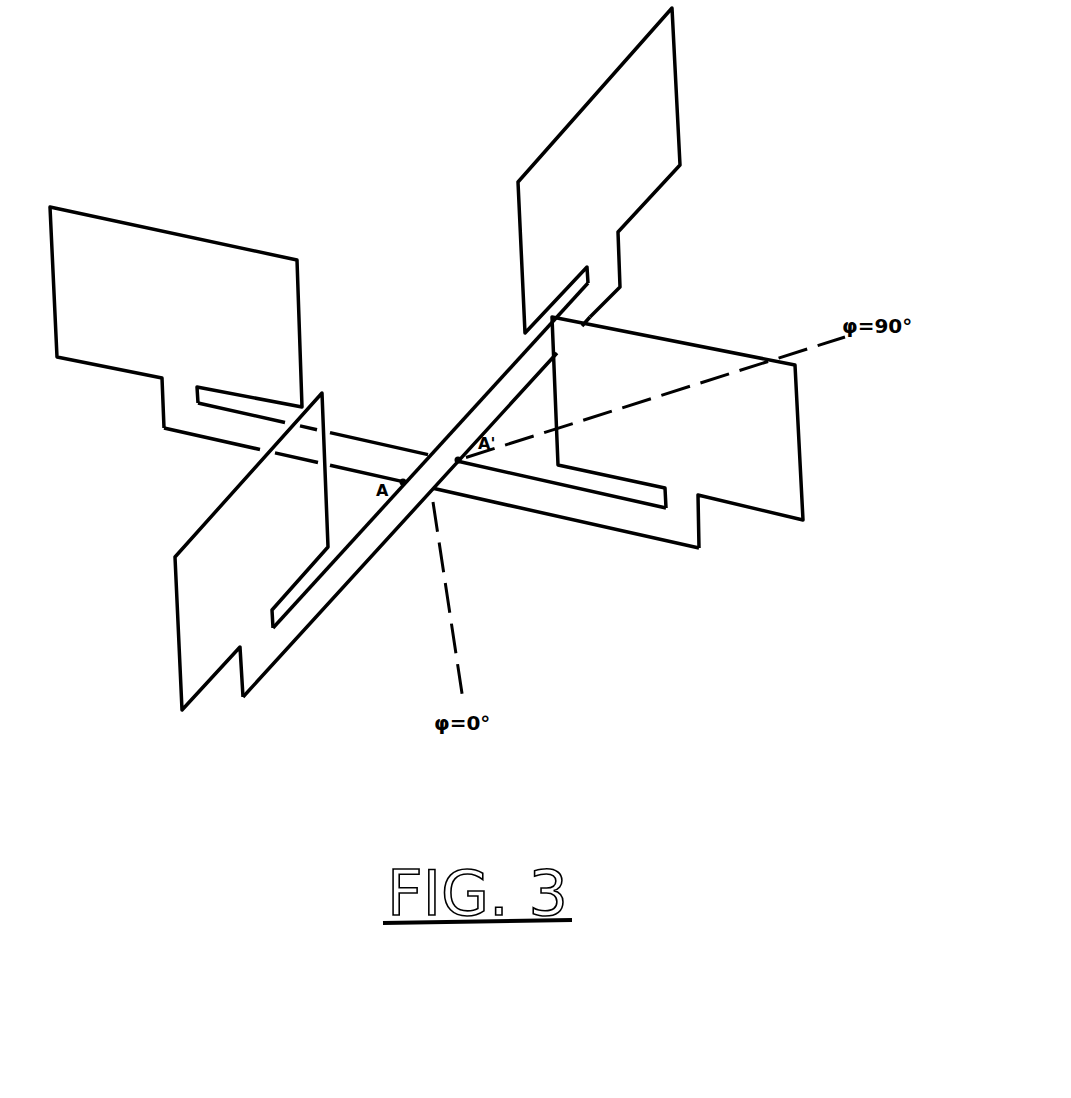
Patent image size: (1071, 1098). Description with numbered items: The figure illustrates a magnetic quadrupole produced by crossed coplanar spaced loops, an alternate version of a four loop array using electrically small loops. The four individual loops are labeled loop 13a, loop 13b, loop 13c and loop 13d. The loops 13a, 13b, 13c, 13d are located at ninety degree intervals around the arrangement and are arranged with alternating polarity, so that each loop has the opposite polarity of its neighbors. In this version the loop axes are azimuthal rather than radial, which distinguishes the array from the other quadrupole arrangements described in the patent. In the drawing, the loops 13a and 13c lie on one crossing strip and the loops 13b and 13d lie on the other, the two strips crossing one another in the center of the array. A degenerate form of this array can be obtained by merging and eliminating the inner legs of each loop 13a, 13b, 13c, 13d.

The loop 13a is at (805, 453).
The loop 13b is at (680, 113).
The loop 13c is at (192, 233).
The loop 13d is at (172, 648).